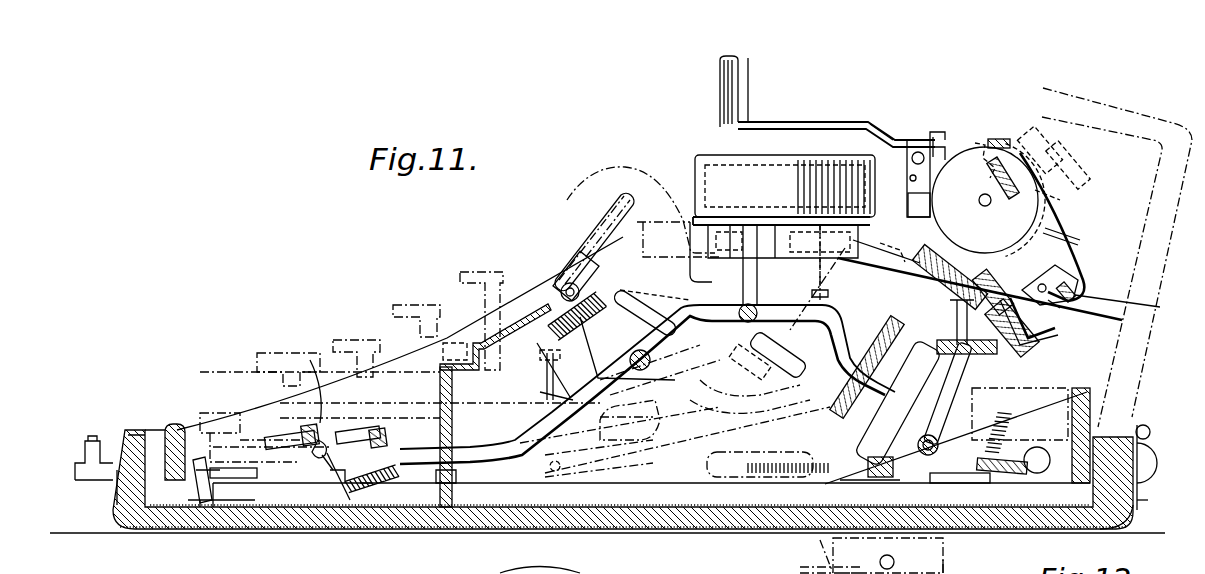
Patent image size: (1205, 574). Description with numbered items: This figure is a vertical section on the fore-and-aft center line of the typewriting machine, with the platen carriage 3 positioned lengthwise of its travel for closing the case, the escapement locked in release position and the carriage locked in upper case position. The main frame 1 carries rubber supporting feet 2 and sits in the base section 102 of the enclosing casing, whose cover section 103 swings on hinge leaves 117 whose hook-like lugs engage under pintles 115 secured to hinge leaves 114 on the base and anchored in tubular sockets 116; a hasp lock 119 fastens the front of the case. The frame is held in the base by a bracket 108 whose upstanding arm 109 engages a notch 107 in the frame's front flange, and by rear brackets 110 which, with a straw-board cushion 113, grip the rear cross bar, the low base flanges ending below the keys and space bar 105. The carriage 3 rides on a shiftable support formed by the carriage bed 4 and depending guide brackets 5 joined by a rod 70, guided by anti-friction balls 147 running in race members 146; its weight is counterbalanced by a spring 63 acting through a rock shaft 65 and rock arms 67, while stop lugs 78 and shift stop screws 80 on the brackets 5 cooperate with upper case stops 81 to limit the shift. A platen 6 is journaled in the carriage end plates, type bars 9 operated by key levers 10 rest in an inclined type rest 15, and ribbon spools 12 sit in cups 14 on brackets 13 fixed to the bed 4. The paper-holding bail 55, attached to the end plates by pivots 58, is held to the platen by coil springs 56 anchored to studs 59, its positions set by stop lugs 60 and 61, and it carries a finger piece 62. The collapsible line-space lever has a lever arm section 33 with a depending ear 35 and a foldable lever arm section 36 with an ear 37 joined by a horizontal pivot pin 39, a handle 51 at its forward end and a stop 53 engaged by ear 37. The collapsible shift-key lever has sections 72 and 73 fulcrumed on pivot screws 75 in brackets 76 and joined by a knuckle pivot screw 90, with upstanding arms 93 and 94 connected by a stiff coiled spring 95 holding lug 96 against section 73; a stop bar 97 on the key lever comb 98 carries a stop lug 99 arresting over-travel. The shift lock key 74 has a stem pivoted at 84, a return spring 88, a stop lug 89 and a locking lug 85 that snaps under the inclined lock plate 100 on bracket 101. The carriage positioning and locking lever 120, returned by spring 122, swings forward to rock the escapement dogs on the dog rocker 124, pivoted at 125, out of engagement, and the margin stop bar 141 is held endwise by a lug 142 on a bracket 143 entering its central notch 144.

The main frame 1 is at (178, 424).
The rubber supporting feet 2 is at (623, 479).
The platen carriage 3 is at (1094, 257).
The carriage bed 4 is at (980, 280).
The depending guide brackets 5 is at (862, 442).
The platen 6 is at (938, 152).
The type bars 9 is at (575, 277).
The key levers 10 is at (436, 285).
The ribbon spools 12 is at (695, 168).
The brackets 13 is at (822, 289).
The cups 14 is at (722, 155).
The inclined type rest 15 is at (620, 195).
The lever arm section 33 is at (880, 128).
The depending ear 35 is at (920, 145).
The foldable lever arm section 36 is at (822, 122).
The depending ear 37 is at (910, 172).
The horizontal pivot pin 39 is at (930, 145).
The finger-piece or handle 51 is at (742, 78).
The stop 53 is at (912, 212).
The paper-holding bail 55 is at (1000, 139).
The coil springs 56 is at (986, 208).
The pivots 58 is at (1080, 170).
The studs 59 is at (1062, 228).
The stop lugs 60 is at (1018, 147).
The stop lugs 61 is at (1050, 203).
The finger piece 62 is at (977, 143).
The spring 63 is at (1045, 368).
The rock shaft 65 is at (1036, 447).
The rock arms 67 is at (937, 452).
The rod 70 is at (893, 468).
The shift-key lever section 72 is at (410, 385).
The shift-key lever section 73 is at (561, 573).
The shift lock key 74 is at (325, 430).
The transverse pivot screws 75 is at (770, 319).
The brackets 76 is at (743, 292).
The stop lugs 78 is at (1040, 345).
The shift stop screws 80 is at (906, 483).
The upper case stops 81 is at (850, 440).
The pivot 84 is at (313, 450).
The locking lug 85 is at (373, 530).
The return spring 88 is at (378, 482).
The stop lug 89 is at (289, 379).
The shouldered pivot screw 90 is at (670, 366).
The upstanding arm 93 is at (548, 358).
The upstanding arm 94 is at (608, 302).
The coiled spring 95 is at (555, 303).
The laterally bent lug 96 is at (700, 300).
The stop bar 97 is at (440, 420).
The key lever comb 98 is at (470, 412).
The stop lug 99 is at (437, 478).
The lock plate 100 is at (333, 487).
The bracket 101 is at (267, 477).
The base section 102 is at (727, 497).
The cover section 103 is at (1110, 112).
The space bar 105 is at (205, 413).
The notch 107 is at (206, 488).
The bracket 108 is at (232, 513).
The upstanding arm 109 is at (199, 473).
The brackets 110 is at (1022, 530).
The sheet of straw board 113 is at (1092, 522).
The hinge leaves 114 is at (1148, 502).
The hinge pintles 115 is at (1147, 428).
The tubular sockets 116 is at (1152, 453).
The hinge leaves 117 is at (1137, 395).
The hasp lock 119 is at (85, 452).
The carriage positioning and locking lever 120 is at (935, 300).
The spring 122 is at (871, 556).
The dog rocker 124 is at (956, 428).
The pivot 125 is at (912, 387).
The margin stop bar 141 is at (1136, 306).
The lug 142 is at (1075, 275).
The bracket 143 is at (1062, 303).
The central notch 144 is at (1076, 288).
The race members 146 is at (840, 482).
The anti-friction balls 147 is at (855, 490).